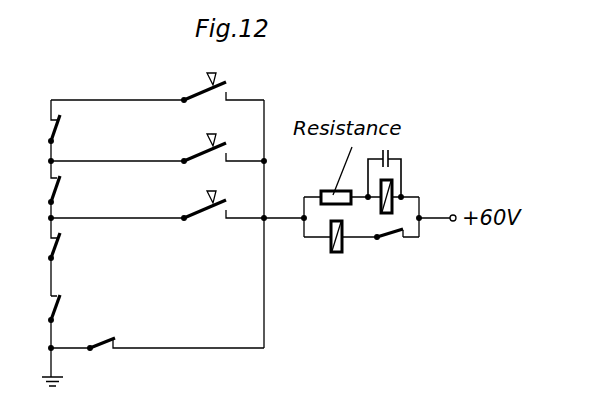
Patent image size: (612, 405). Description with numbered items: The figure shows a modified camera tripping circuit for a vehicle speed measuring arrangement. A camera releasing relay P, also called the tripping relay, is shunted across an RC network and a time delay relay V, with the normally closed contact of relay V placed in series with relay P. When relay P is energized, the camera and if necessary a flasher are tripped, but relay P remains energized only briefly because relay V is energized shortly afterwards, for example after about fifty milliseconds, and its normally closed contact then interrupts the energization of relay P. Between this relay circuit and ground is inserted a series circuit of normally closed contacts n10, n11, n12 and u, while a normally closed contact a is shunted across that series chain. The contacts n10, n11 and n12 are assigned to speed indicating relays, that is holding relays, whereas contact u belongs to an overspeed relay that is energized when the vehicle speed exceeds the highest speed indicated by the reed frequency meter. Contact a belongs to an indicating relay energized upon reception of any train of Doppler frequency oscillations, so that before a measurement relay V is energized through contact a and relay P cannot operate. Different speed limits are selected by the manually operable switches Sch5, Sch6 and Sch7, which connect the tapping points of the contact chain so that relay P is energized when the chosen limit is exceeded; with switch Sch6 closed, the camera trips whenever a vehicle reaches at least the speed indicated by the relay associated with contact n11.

The manually operable switch Sch5 is at (227, 84).
The manually operable switch Sch6 is at (210, 145).
The manually operable switch Sch7 is at (210, 202).
The normally closed contact n10 is at (70, 130).
The normally closed contact n11 is at (70, 189).
The normally closed contact n12 is at (70, 257).
The normally closed contact u is at (61, 321).
The normally closed contact a is at (157, 355).
The camera releasing relay P is at (312, 284).
The time delay relay V is at (393, 188).